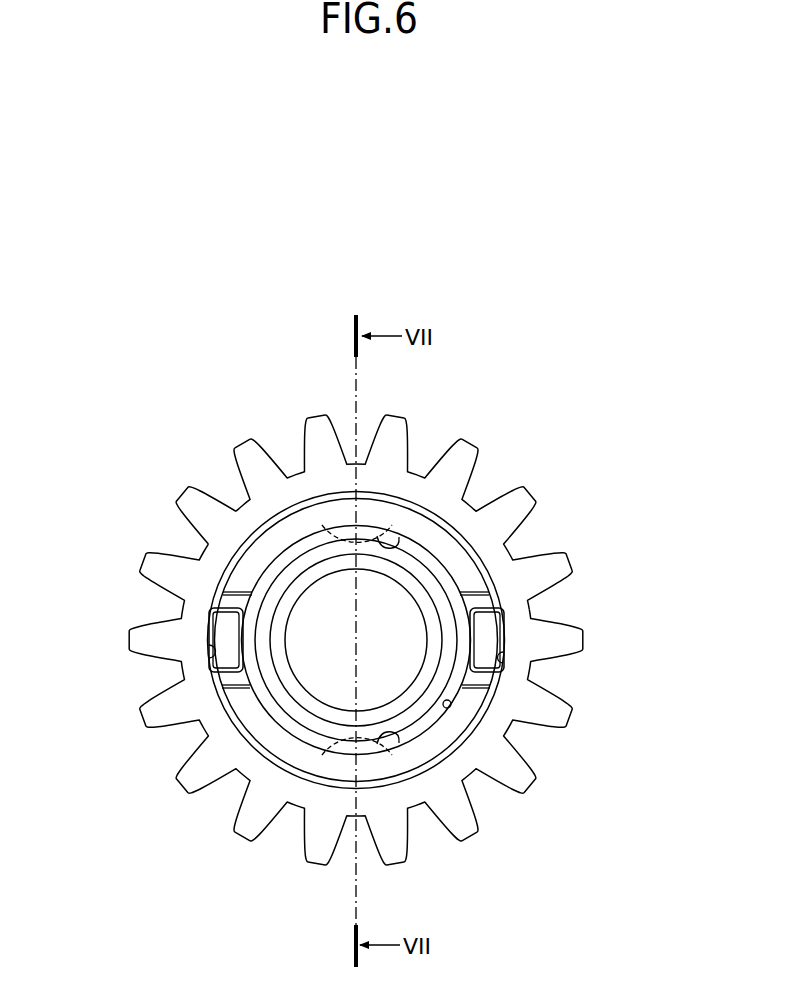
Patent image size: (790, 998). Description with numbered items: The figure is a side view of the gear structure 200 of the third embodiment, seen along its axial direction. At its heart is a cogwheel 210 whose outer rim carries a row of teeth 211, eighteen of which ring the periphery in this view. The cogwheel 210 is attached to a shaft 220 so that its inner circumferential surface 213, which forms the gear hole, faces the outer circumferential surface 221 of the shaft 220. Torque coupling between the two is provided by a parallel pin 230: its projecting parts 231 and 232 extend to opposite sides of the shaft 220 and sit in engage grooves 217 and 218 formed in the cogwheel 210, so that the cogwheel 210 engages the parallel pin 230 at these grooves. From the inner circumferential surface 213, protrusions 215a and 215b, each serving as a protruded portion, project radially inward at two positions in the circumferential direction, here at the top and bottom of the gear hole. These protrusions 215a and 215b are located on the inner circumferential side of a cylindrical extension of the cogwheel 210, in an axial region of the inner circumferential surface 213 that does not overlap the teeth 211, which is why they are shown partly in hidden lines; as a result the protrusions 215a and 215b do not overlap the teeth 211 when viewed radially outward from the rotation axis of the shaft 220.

The gear structure 200 is at (222, 432).
The cogwheel 210 is at (151, 546).
The teeth 211 is at (192, 487).
The inner circumferential surface 213 is at (451, 706).
The protrusion 215a is at (398, 742).
The protrusion 215b is at (388, 545).
The engage groove 217 is at (505, 665).
The engage groove 218 is at (212, 659).
The shaft 220 is at (449, 558).
The outer circumferential surface 221 is at (453, 576).
The parallel pin 230 is at (508, 639).
The projecting part 231 is at (505, 613).
The projecting part 232 is at (225, 623).